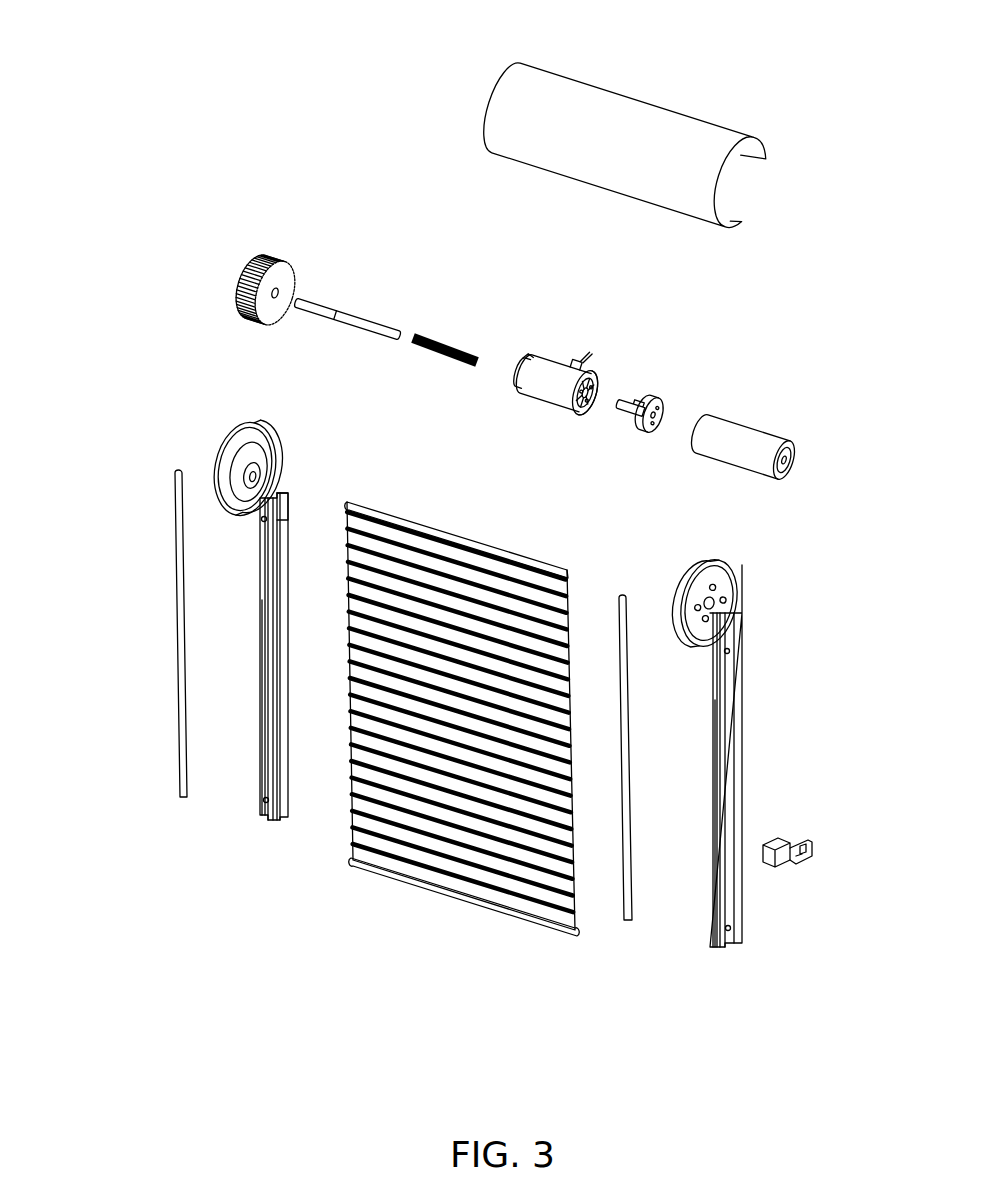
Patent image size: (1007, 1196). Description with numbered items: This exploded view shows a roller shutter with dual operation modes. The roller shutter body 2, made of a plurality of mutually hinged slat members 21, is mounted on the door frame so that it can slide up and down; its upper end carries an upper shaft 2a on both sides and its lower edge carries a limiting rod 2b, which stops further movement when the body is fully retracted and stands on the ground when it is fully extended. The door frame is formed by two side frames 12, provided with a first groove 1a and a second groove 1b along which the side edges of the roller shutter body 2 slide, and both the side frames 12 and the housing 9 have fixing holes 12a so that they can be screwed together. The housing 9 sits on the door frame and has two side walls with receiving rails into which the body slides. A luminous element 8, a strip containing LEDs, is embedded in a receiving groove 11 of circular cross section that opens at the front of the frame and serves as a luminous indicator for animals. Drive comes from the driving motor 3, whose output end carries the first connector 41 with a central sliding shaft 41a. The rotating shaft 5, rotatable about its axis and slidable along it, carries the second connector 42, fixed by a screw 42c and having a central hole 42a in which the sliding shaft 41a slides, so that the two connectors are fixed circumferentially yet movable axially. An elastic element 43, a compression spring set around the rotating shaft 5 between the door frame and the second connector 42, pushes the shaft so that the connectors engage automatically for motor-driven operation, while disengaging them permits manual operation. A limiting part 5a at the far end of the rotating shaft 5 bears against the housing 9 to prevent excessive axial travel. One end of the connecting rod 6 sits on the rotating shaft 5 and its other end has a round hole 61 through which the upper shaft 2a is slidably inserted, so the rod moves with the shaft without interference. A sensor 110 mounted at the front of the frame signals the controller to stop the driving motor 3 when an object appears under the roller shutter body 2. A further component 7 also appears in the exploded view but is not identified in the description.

The roller shutter body 2 is at (431, 697).
The upper shaft 2a is at (358, 495).
The limiting rod 2b is at (545, 925).
The slat members 21 is at (447, 828).
The first groove 1a is at (285, 748).
The second groove 1b is at (717, 885).
The driving motor 3 is at (755, 445).
The rotating shaft 5 is at (352, 317).
The limiting part 5a is at (335, 317).
The connecting rod 6 is at (575, 358).
The round hole 61 is at (587, 357).
The gear 7 is at (252, 268).
The luminous element 8 is at (175, 578).
The housing 9 is at (627, 120).
The receiving groove 11 is at (285, 512).
The side frames 12 is at (262, 618).
The fixing holes 12a is at (263, 520).
The first connector 41 is at (660, 403).
The sliding shaft 41a is at (627, 413).
The second connector 42 is at (550, 388).
The hole 42a is at (582, 415).
The screw 42c is at (522, 357).
The elastic element 43 is at (433, 358).
The sensor 110 is at (792, 853).